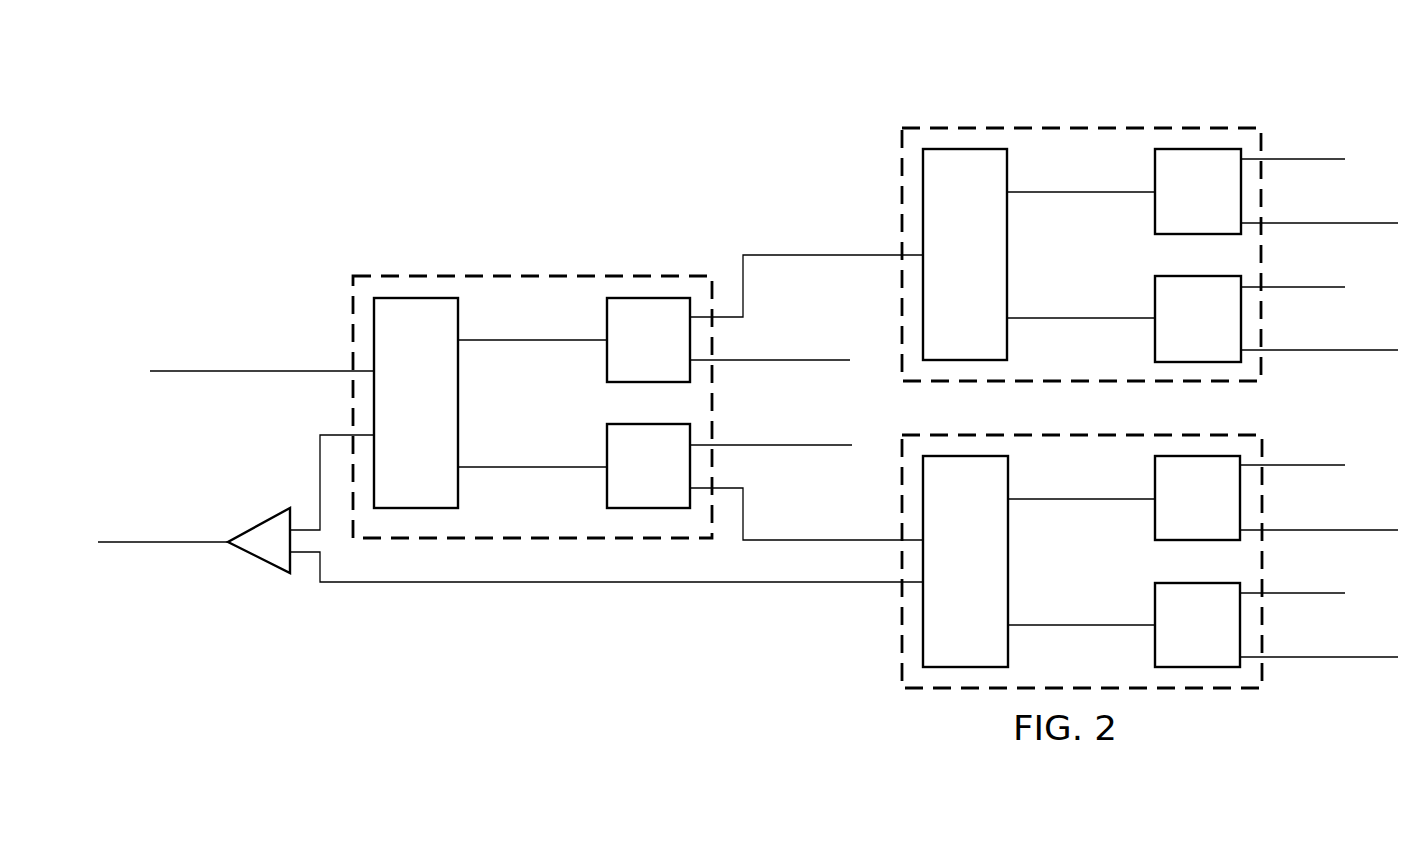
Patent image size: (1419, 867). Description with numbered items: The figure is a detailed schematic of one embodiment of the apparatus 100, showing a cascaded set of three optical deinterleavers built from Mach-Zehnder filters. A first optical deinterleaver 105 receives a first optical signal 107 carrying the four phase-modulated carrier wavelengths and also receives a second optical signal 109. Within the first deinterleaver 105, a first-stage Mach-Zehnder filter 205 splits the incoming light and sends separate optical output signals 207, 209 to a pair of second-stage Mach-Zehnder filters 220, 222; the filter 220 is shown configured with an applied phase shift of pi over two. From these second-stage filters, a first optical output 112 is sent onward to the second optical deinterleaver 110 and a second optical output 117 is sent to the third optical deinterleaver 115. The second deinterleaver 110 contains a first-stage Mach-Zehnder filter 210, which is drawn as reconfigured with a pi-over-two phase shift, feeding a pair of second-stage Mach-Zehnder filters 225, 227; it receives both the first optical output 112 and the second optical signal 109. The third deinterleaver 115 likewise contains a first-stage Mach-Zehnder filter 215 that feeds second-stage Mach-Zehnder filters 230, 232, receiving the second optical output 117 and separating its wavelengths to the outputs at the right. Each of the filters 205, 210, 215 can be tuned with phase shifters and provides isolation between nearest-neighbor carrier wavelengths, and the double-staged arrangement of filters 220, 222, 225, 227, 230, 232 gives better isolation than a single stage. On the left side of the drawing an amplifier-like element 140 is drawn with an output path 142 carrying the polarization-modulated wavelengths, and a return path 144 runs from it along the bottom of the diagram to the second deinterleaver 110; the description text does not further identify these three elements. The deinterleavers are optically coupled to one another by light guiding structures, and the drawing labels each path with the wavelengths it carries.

The apparatus 100 is at (476, 114).
The first optical deinterleaver 105 is at (411, 270).
The first optical signal 107 is at (273, 372).
The second optical signal 109 is at (320, 471).
The second optical deinterleaver 110 is at (1182, 692).
The first optical output 112 is at (838, 541).
The third optical deinterleaver 115 is at (1180, 124).
The second optical output 117 is at (858, 256).
The optical amplifier 140 is at (258, 561).
The amplifier output path 142 is at (168, 544).
The return optical path 144 is at (605, 583).
The Mach-Zehnder filter 205 is at (438, 417).
The optical output signal 207 is at (522, 468).
The optical output signal 209 is at (522, 341).
The Mach-Zehnder filter 210 is at (987, 592).
The Mach-Zehnder filter 215 is at (987, 268).
The second-stage Mach-Zehnder filter 220 is at (670, 372).
The second-stage Mach-Zehnder filter 222 is at (670, 480).
The second-stage Mach-Zehnder filter 225 is at (1219, 640).
The second-stage Mach-Zehnder filter 227 is at (1219, 513).
The second-stage Mach-Zehnder filter 230 is at (1219, 332).
The second-stage Mach-Zehnder filter 232 is at (1219, 202).